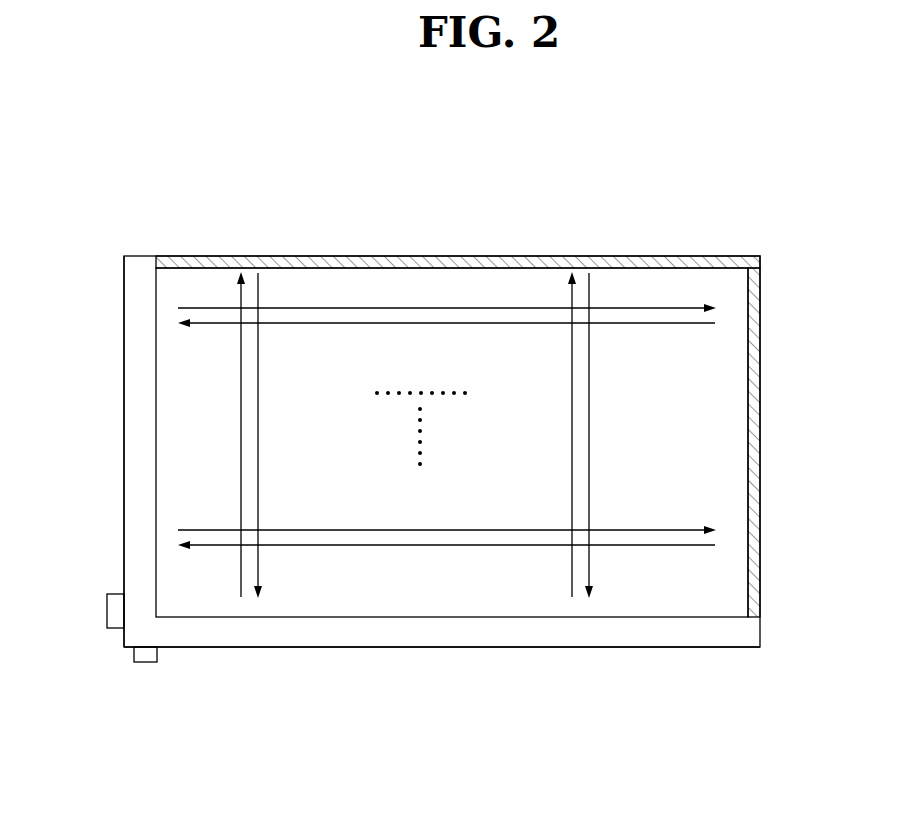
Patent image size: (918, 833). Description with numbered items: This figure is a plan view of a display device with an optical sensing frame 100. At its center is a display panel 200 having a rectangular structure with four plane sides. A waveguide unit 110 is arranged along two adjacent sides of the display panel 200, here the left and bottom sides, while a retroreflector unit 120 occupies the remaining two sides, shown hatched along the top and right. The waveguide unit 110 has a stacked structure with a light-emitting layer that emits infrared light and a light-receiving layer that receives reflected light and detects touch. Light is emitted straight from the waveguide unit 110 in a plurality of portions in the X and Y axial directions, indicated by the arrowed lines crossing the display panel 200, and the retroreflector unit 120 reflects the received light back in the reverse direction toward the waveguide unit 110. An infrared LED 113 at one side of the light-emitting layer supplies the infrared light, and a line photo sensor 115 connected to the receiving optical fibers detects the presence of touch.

The display device with an optical sensing frame 100 is at (663, 238).
The waveguide unit 110 is at (728, 631).
The retroreflector unit 120 is at (750, 366).
The display panel 200 is at (700, 437).
The line photo sensor 115 is at (96, 615).
The infrared LED 113 is at (156, 676).